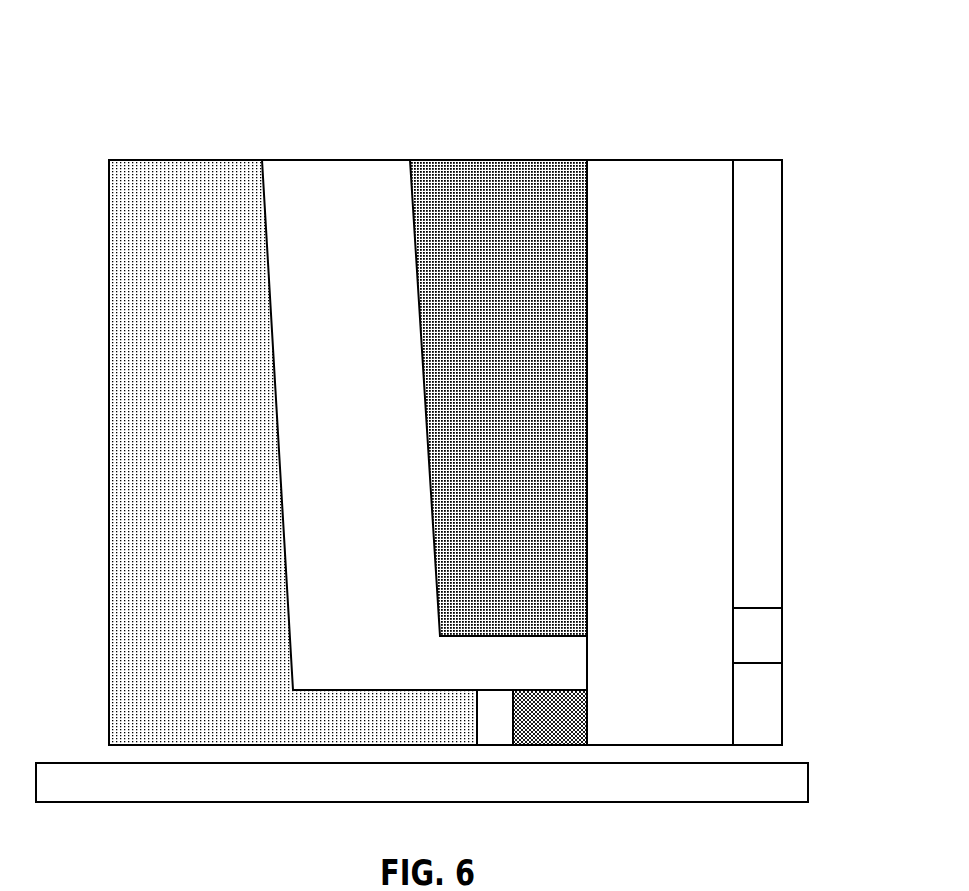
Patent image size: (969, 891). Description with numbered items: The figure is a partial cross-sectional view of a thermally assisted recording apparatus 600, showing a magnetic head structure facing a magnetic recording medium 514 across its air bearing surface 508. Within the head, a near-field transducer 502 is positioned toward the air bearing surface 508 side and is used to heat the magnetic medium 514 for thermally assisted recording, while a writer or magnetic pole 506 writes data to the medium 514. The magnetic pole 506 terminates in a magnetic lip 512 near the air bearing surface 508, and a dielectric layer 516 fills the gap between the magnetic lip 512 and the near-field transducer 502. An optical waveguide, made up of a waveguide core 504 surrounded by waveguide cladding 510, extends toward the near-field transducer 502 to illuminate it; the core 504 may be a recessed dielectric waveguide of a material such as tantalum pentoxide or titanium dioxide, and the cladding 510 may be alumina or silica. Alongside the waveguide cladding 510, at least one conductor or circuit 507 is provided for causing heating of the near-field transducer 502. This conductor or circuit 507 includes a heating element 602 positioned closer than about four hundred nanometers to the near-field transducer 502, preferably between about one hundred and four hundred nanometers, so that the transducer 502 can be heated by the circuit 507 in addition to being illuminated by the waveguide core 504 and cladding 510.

The semiconductor device structure 600 is at (808, 123).
The near-field transducer 502 is at (563, 705).
The waveguide core 504 is at (525, 297).
The writer (magnetic pole) 506 is at (212, 334).
The conductor or circuit 507 is at (758, 333).
The air bearing surface 508 is at (700, 748).
The waveguide cladding 510 is at (680, 226).
The magnetic lip 512 is at (423, 688).
The magnetic recording medium 514 is at (452, 794).
The dielectric layer 516 is at (493, 735).
The heating element 602 is at (758, 637).